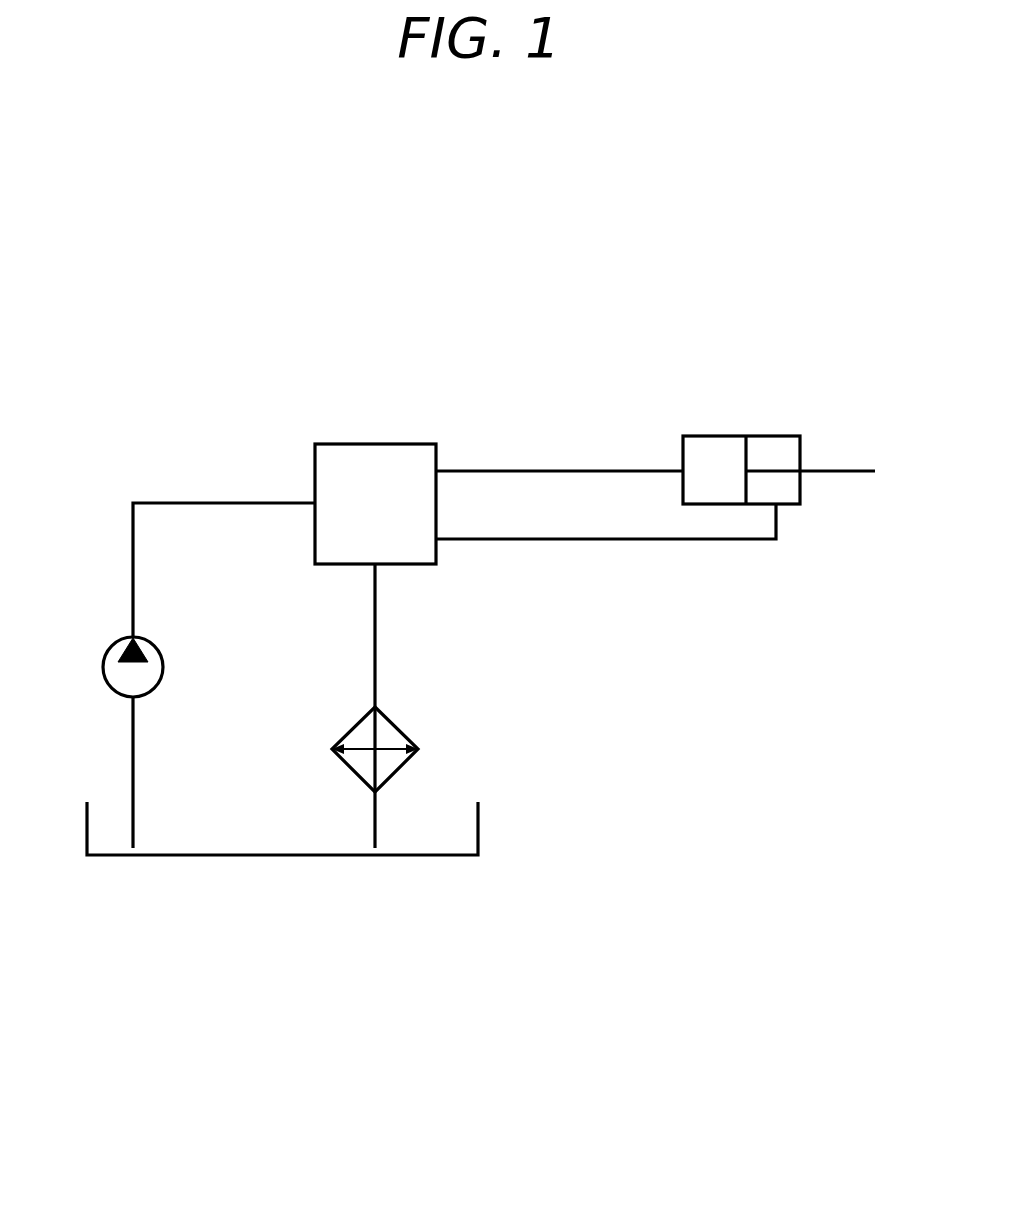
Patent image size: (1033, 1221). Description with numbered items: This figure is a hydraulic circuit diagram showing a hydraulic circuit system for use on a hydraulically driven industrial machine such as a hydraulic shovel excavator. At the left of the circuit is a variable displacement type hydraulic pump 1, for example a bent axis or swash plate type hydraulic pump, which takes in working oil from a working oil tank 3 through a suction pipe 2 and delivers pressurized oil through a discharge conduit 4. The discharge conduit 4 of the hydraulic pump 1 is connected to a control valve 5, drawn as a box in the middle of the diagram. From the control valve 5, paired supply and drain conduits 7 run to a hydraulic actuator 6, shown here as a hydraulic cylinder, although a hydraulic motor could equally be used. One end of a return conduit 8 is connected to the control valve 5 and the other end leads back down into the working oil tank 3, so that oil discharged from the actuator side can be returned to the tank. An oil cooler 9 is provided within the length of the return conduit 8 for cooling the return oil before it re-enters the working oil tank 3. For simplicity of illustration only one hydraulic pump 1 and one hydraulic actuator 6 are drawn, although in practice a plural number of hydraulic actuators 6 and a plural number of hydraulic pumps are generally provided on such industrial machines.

The hydraulic pump 1 is at (164, 658).
The suction pipe 2 is at (135, 783).
The working oil tank 3 is at (273, 855).
The discharge conduit 4 is at (196, 503).
The control valve 5 is at (370, 444).
The hydraulic actuator 6 is at (722, 436).
The supply and drain conduits 7 is at (557, 539).
The return conduit 8 is at (377, 632).
The oil cooler 9 is at (403, 732).